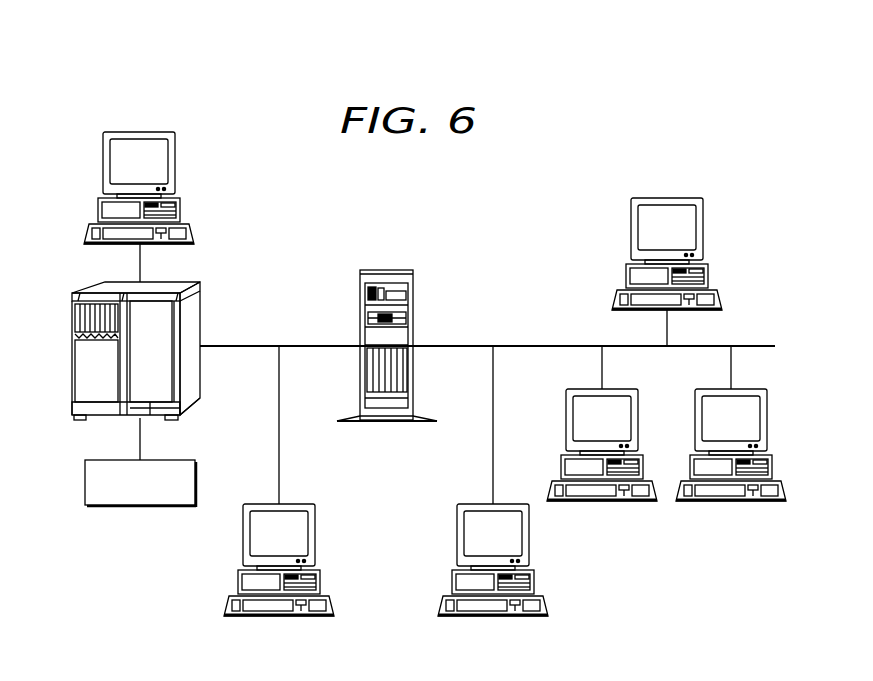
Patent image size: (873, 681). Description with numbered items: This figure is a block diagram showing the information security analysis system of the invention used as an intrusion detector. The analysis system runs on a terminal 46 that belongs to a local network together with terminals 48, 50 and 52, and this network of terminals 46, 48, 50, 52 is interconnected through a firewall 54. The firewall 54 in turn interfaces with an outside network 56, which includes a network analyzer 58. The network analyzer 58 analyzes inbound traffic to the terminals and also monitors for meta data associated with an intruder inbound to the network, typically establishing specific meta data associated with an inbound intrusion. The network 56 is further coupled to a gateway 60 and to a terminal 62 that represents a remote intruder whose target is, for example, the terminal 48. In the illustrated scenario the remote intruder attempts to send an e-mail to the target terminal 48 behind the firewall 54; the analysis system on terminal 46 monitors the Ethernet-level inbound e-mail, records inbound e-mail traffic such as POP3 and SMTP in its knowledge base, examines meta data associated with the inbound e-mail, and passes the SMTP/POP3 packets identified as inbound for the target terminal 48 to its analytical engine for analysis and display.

The terminal 46 is at (493, 616).
The target terminal 48 is at (731, 501).
The terminal 50 is at (667, 197).
The terminal 52 is at (600, 501).
The firewall 54 is at (386, 268).
The network 56 is at (70, 363).
The network analyzer 58 is at (279, 616).
The gateway 60 is at (140, 506).
The terminal 62 is at (140, 131).